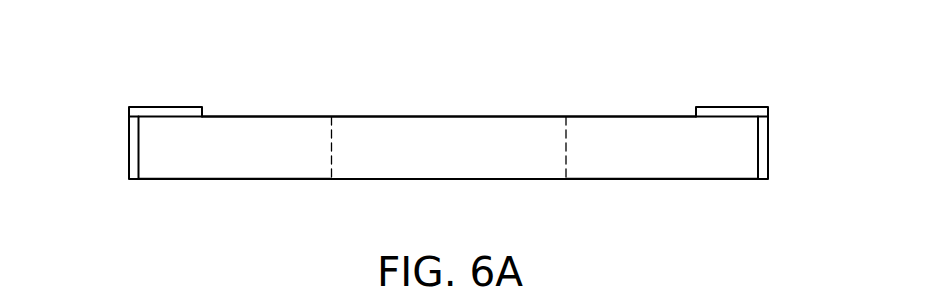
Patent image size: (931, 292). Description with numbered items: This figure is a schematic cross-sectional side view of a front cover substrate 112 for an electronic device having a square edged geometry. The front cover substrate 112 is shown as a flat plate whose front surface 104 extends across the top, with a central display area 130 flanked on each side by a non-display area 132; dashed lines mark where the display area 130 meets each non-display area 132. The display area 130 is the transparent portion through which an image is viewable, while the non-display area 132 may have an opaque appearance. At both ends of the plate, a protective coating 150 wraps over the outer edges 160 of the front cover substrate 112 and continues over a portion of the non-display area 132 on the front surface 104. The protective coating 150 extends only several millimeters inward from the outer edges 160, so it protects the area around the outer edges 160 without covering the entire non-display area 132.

The front cover substrate 112 is at (519, 93).
The front surface 104 is at (661, 115).
The display area 130 is at (540, 180).
The non-display area 132 is at (237, 180).
The protective coating 150 is at (151, 105).
The outer edges 160 is at (128, 147).